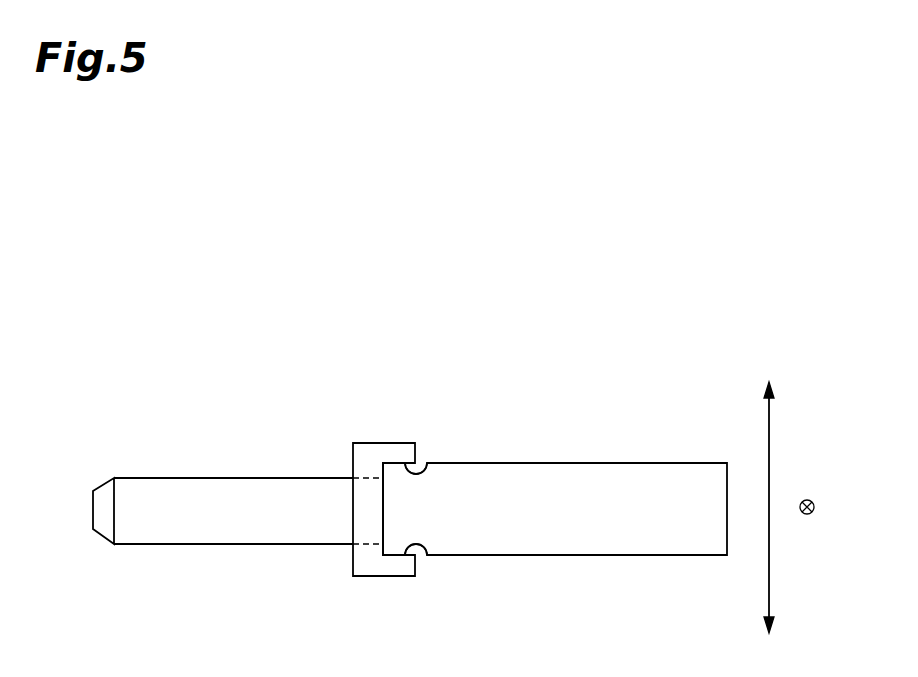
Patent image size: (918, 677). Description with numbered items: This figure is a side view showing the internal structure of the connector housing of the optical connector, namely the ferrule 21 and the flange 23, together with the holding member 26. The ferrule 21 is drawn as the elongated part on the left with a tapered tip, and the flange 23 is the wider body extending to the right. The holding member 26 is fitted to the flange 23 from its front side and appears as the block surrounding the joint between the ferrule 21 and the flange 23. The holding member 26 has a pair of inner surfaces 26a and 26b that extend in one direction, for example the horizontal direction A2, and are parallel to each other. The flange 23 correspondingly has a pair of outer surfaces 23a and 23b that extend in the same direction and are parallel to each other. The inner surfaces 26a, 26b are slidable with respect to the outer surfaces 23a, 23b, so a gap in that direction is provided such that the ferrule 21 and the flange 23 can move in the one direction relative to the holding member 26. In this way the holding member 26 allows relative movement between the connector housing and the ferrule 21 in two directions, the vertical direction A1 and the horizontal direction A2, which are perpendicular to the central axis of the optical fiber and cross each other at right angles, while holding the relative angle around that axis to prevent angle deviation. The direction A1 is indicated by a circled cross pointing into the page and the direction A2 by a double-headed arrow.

The ferrule 21 is at (221, 533).
The flange 23 is at (600, 467).
The outer surface 23a is at (402, 463).
The outer surface 23b is at (397, 555).
The holding member 26 is at (365, 567).
The inner surface 26a is at (425, 465).
The inner surface 26b is at (415, 543).
The vertical direction A1 is at (808, 515).
The horizontal direction A2 is at (769, 590).